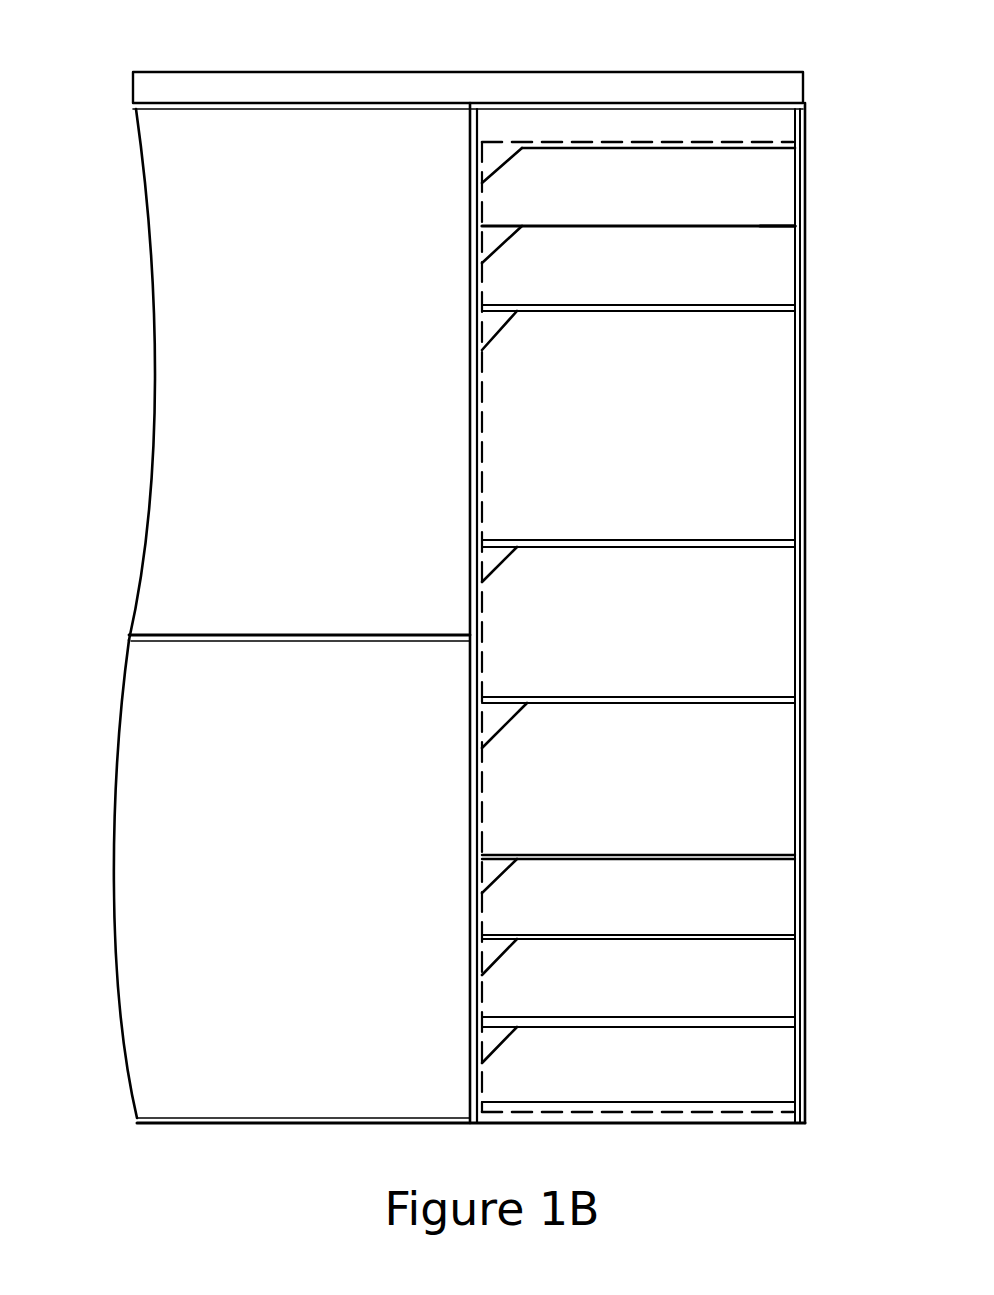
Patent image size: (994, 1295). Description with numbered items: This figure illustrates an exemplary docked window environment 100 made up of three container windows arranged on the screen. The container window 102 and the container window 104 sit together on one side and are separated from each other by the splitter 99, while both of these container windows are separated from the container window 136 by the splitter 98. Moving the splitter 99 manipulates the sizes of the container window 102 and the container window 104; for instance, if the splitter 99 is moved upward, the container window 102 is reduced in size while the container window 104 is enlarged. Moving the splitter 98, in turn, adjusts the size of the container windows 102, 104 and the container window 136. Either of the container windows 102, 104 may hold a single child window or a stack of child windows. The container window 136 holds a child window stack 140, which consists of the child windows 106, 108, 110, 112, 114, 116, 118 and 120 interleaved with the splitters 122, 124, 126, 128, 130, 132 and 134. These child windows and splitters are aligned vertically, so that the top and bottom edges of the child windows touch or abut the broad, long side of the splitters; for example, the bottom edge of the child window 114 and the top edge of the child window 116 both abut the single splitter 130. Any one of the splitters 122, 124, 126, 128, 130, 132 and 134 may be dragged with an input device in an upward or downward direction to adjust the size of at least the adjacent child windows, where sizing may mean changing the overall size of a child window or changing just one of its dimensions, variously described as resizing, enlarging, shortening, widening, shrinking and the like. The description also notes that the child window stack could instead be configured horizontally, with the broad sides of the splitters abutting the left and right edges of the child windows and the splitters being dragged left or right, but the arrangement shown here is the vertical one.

The splitter 98 is at (468, 157).
The splitter 99 is at (130, 645).
The docked window environment 100 is at (90, 191).
The container window 102 is at (226, 374).
The container window 104 is at (219, 879).
The child window 106 is at (638, 187).
The child window 108 is at (638, 268).
The child window 110 is at (638, 429).
The child window 112 is at (638, 625).
The child window 114 is at (638, 781).
The child window 116 is at (638, 899).
The child window 118 is at (638, 983).
The child window 120 is at (638, 1064).
The splitter 122 is at (800, 222).
The splitter 124 is at (800, 307).
The splitter 126 is at (800, 546).
The splitter 128 is at (800, 703).
The splitter 130 is at (800, 854).
The splitter 132 is at (800, 937).
The splitter 134 is at (800, 1020).
The container window 136 is at (637, 614).
The child window stack 140 is at (752, 1112).